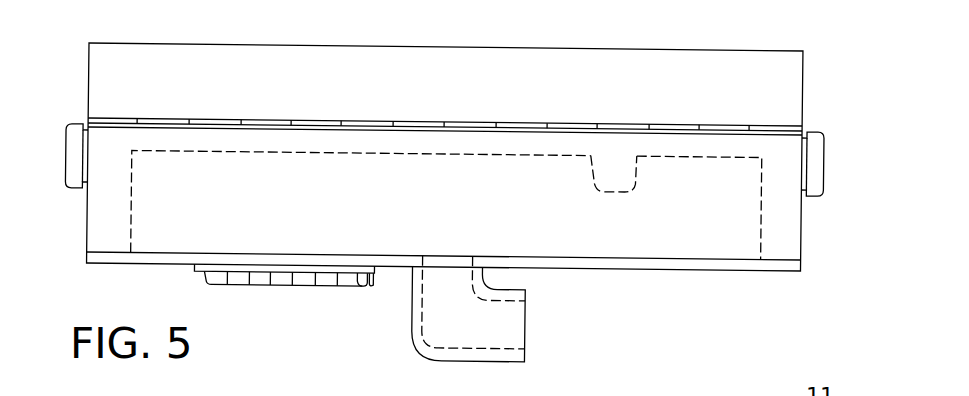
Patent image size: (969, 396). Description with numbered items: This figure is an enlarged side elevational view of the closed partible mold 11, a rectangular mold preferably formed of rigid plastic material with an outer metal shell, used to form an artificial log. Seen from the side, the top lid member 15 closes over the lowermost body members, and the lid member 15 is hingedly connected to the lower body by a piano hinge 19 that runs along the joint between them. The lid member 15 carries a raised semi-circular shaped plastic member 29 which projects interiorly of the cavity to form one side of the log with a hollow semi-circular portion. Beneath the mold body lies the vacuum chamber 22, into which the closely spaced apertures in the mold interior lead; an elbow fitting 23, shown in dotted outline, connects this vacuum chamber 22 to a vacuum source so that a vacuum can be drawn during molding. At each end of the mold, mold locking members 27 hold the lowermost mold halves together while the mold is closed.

The partible mold 11 is at (777, 50).
The lid member 15 is at (517, 60).
The piano hinge 19 is at (573, 124).
The vacuum chamber 22 is at (672, 235).
The elbow fitting 23 is at (512, 327).
The mold locking members 27 is at (67, 141).
The raised semi-circular shaped plastic member 29 is at (640, 186).